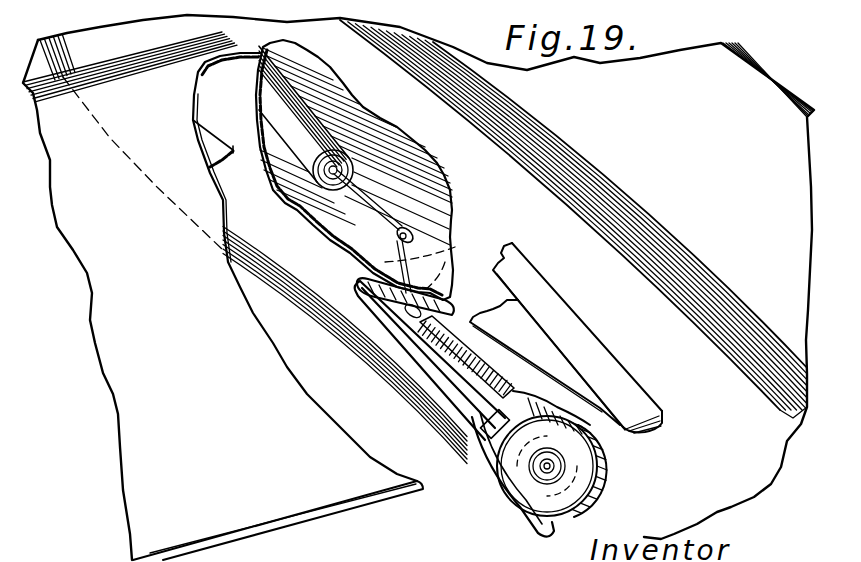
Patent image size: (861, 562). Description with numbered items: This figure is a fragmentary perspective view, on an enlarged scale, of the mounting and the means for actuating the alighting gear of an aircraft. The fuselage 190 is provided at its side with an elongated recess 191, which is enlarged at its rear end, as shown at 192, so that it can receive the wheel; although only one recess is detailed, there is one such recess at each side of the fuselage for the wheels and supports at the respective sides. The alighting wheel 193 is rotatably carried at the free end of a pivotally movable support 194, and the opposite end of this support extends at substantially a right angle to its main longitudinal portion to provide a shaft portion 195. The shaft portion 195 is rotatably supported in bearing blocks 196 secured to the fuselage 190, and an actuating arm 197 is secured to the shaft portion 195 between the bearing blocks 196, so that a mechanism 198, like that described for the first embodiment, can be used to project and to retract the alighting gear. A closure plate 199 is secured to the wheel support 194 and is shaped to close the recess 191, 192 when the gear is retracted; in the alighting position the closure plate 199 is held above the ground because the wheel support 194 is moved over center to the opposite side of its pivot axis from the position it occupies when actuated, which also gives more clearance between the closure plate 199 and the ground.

The fuselage 190 is at (573, 219).
The elongated recess 191 is at (468, 353).
The enlarged rear end of recess 192 is at (640, 406).
The alighting wheel 193 is at (276, 30).
The pivotally movable support 194 is at (437, 404).
The shaft portion 195 is at (374, 285).
The bearing block 196 is at (454, 254).
The actuating arm 197 is at (420, 243).
The mechanism 198 is at (340, 141).
The closure plate 199 is at (420, 370).